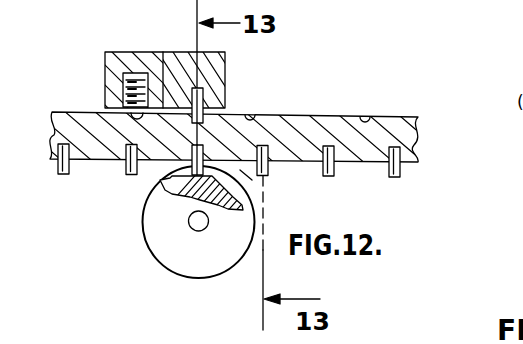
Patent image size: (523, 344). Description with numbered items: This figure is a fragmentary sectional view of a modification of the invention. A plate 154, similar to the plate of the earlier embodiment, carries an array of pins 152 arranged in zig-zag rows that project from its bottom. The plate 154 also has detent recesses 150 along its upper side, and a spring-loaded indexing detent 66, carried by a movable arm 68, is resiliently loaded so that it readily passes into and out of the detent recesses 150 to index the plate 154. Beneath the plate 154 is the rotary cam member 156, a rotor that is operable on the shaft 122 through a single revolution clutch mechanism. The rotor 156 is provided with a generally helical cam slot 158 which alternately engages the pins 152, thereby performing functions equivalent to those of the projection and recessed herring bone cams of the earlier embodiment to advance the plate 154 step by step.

The indexing detent 66 is at (112, 100).
The movable arm 68 is at (136, 51).
The shaft 122 is at (188, 218).
The detent recesses 150 is at (363, 114).
The pins 152 is at (343, 173).
The plate 154 is at (412, 118).
The rotary cam member 156 is at (202, 278).
The helical cam slot 158 is at (248, 186).